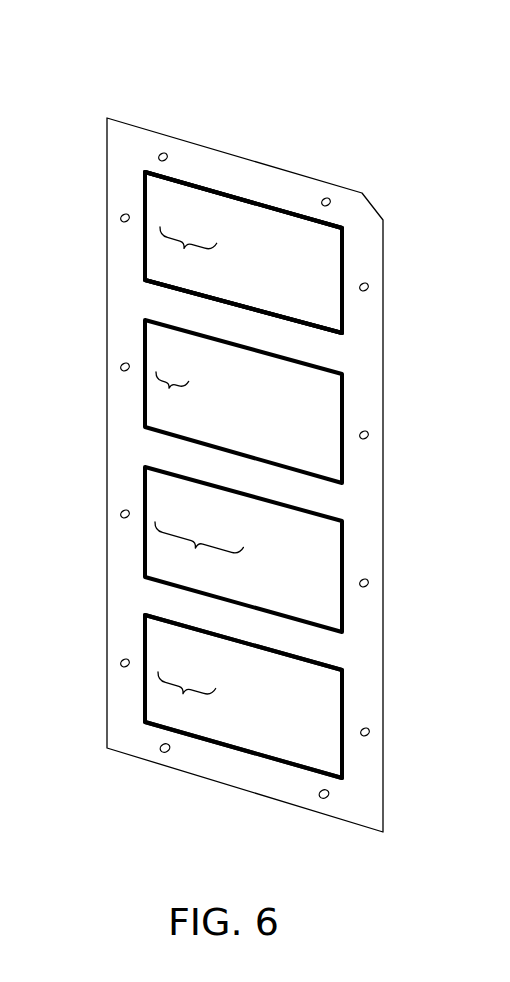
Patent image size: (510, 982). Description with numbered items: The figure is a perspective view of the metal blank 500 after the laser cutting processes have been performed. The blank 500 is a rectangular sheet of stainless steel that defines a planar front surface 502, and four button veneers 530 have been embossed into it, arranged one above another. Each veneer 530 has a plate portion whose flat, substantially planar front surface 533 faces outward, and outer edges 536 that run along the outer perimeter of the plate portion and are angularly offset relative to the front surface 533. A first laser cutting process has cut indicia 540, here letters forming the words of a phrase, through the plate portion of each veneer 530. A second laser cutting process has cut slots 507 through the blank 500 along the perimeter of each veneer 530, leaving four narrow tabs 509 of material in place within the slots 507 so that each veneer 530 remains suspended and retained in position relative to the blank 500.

The blank 500 is at (56, 86).
The front surface 502 is at (288, 192).
The slots 507 is at (200, 190).
The tabs 509 is at (155, 172).
The veneers 530 is at (313, 298).
The front surface 533 is at (243, 231).
The outer edges 536 is at (320, 668).
The indicia 540 is at (187, 250).